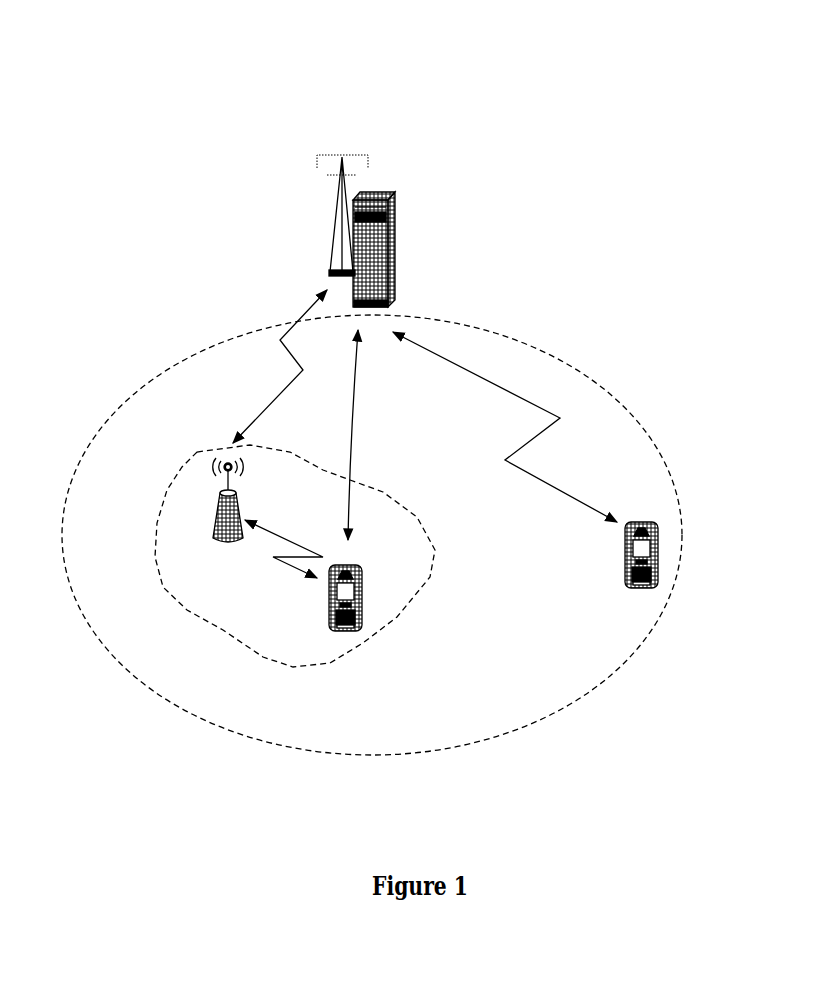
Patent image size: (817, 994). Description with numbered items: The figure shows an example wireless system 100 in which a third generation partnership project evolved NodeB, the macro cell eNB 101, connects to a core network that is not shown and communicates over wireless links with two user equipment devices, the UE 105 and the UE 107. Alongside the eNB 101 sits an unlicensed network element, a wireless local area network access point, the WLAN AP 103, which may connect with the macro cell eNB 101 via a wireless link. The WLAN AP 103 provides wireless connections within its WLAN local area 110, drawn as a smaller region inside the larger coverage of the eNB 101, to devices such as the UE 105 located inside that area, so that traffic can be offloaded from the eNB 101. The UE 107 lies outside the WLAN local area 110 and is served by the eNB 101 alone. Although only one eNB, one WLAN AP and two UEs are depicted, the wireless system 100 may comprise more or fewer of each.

The wireless system 100 is at (655, 150).
The evolved NodeB 101 is at (318, 197).
The WLAN access point 103 is at (208, 507).
The user equipment 105 is at (353, 637).
The user equipment 107 is at (657, 538).
The WLAN local area 110 is at (232, 582).